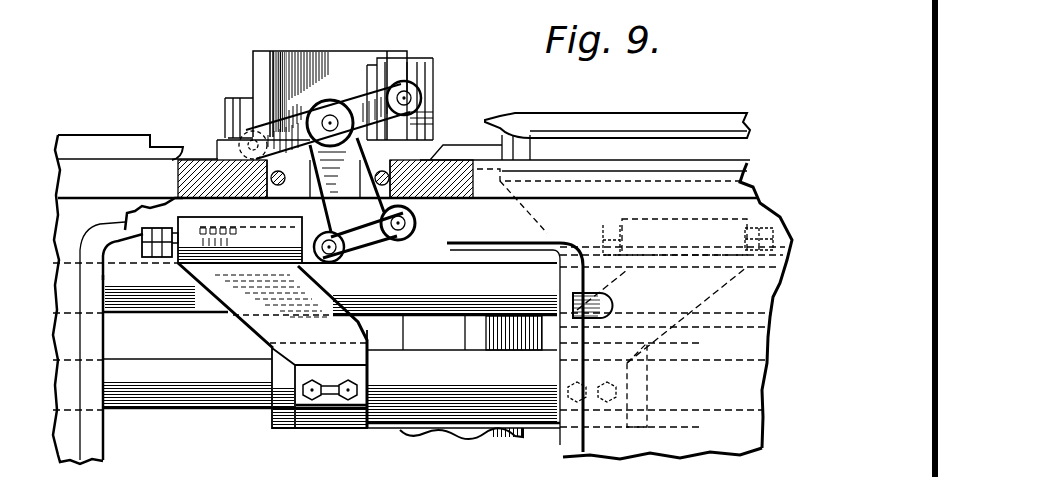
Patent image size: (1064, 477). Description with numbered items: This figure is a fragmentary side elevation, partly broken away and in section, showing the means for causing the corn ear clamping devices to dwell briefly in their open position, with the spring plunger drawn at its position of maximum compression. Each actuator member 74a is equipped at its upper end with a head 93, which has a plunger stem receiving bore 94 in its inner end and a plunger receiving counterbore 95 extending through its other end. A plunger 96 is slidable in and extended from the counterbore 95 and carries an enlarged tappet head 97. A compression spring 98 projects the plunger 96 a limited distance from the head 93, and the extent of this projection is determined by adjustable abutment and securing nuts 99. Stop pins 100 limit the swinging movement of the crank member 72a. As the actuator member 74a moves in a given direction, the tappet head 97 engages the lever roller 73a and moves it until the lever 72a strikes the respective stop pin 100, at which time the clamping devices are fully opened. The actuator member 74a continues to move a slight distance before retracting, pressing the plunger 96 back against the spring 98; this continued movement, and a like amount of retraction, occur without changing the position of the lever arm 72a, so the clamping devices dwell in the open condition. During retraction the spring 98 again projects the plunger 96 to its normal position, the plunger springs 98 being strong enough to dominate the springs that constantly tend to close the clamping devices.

The crank member 72a is at (392, 243).
The lever roller 73a is at (415, 220).
The actuator member 74a is at (705, 304).
The head 93 is at (228, 222).
The plunger stem receiving bore 94 is at (180, 258).
The plunger receiving counterbore 95 is at (177, 298).
The plunger 96 is at (274, 249).
The tappet head 97 is at (323, 268).
The compression spring 98 is at (207, 311).
The adjustable abutment and securing nuts 99 is at (153, 227).
The stop pins 100 is at (282, 187).